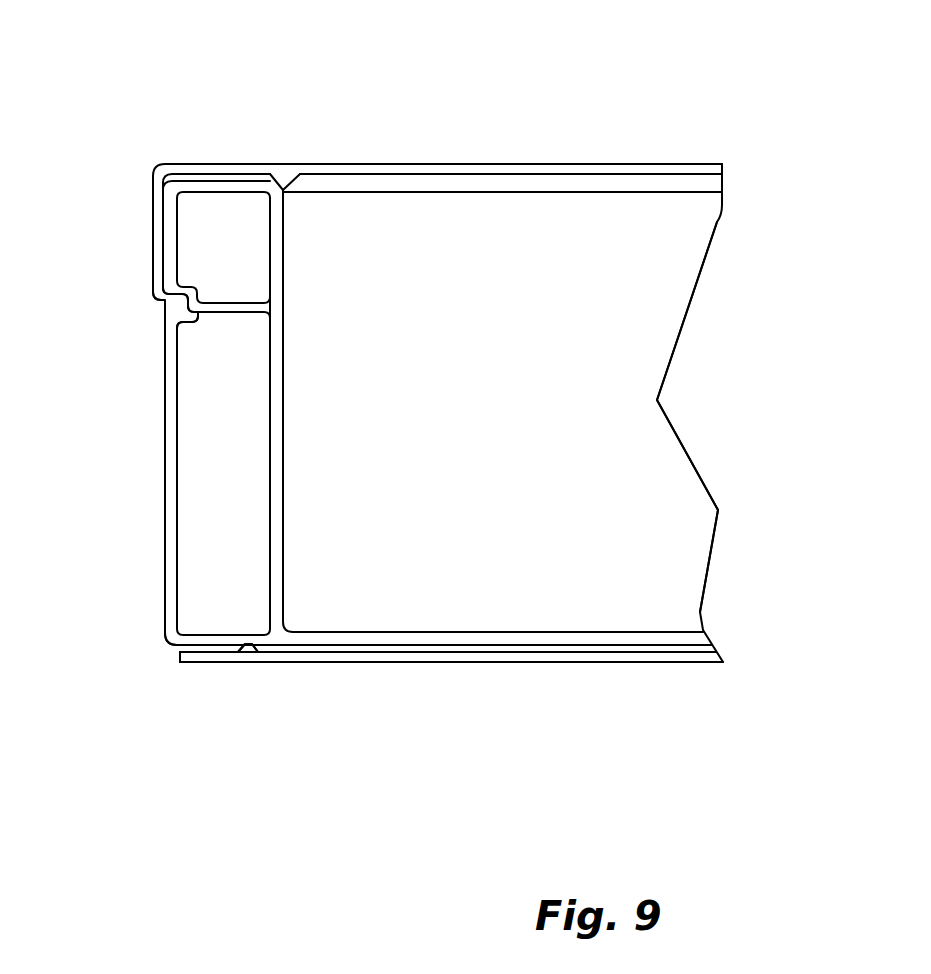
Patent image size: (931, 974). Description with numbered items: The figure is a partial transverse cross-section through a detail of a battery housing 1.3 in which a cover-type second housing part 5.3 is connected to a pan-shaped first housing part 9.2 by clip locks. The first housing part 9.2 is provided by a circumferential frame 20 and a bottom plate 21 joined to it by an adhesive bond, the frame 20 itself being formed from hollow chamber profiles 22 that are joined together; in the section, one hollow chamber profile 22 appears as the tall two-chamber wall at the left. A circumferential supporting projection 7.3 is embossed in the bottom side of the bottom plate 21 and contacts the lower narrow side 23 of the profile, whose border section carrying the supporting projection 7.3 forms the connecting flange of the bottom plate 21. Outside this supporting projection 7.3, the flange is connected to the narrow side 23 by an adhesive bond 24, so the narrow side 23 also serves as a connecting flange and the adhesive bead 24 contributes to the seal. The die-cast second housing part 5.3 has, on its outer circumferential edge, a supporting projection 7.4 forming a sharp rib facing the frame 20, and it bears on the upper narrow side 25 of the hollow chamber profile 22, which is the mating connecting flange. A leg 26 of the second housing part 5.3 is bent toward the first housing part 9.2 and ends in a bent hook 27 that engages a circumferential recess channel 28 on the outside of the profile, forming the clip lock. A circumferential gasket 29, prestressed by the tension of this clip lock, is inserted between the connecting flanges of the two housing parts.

The battery housing 1.3 is at (522, 142).
The second housing part 5.3 is at (618, 165).
The supporting projection 7.3 is at (255, 658).
The supporting projection 7.4 is at (300, 182).
The first housing part 9.2 is at (602, 465).
The frame 20 is at (307, 513).
The bottom plate 21 is at (525, 663).
The hollow chamber profile 22 is at (285, 383).
The lower narrow side 23 is at (212, 632).
The adhesive bond 24 is at (185, 655).
The upper narrow side 25 is at (213, 192).
The leg 26 is at (150, 248).
The hook 27 is at (170, 307).
The recess channel 28 is at (178, 316).
The gasket 29 is at (222, 176).